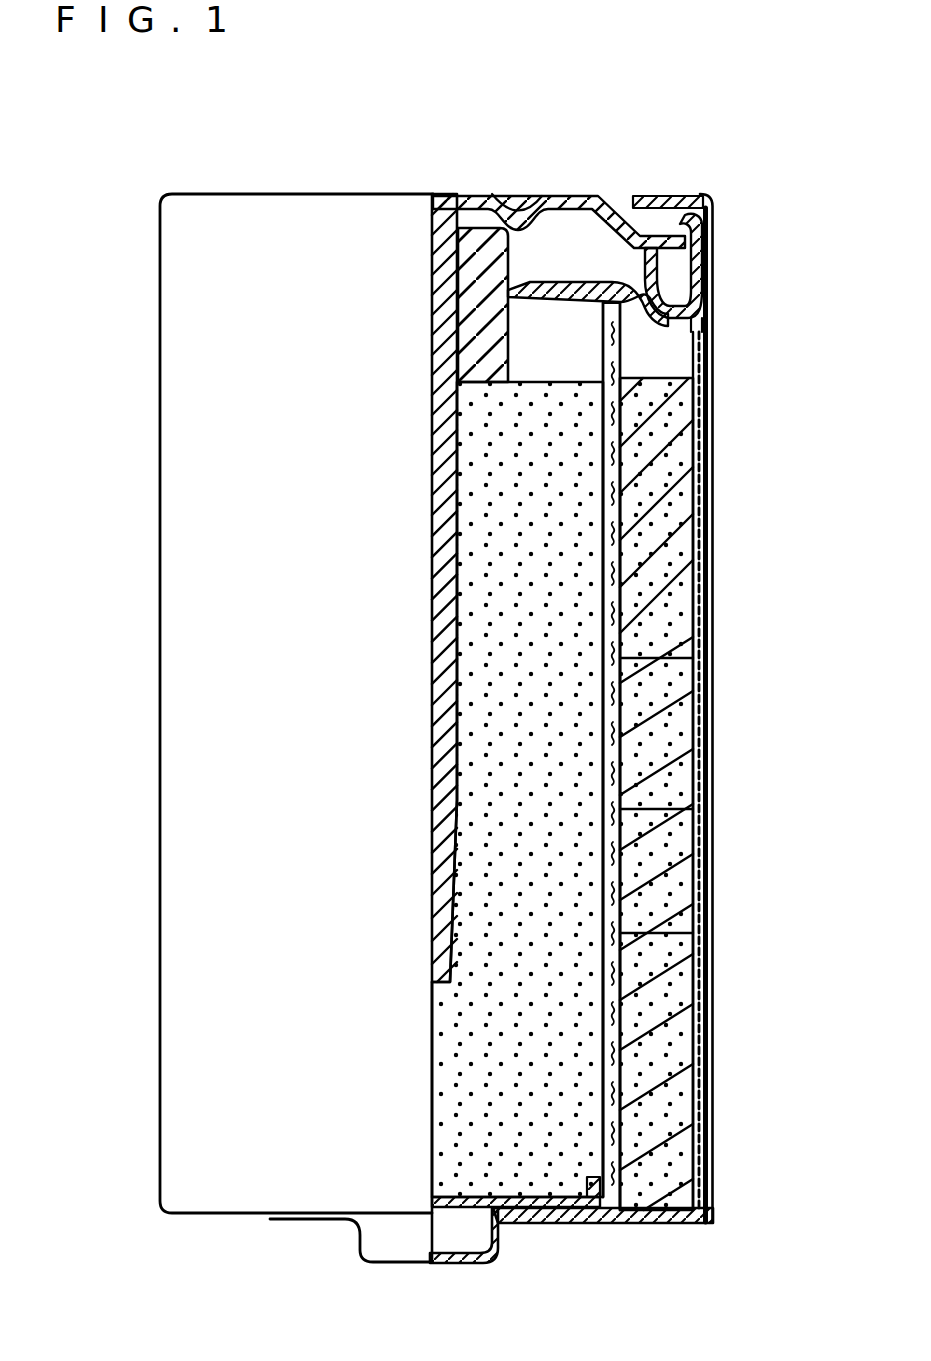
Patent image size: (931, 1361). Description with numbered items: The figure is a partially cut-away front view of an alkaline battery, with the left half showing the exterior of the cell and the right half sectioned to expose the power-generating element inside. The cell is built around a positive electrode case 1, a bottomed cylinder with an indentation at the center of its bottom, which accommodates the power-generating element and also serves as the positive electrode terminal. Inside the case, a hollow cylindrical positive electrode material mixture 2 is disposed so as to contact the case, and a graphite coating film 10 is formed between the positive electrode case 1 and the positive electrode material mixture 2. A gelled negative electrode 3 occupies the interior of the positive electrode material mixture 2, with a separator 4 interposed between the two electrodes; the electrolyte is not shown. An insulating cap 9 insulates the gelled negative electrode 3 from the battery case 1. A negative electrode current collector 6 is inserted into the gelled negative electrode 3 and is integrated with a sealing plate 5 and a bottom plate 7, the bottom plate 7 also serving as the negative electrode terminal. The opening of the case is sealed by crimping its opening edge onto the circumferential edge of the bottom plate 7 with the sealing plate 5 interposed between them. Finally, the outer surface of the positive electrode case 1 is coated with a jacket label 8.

The positive electrode case 1 is at (712, 665).
The positive electrode material mixture 2 is at (655, 740).
The gelled negative electrode 3 is at (565, 568).
The separator 4 is at (620, 805).
The sealing plate 5 is at (492, 340).
The negative electrode current collector 6 is at (441, 482).
The bottom plate 7 is at (488, 194).
The jacket label 8 is at (713, 277).
The insulating cap 9 is at (538, 1223).
The graphite coating film 10 is at (712, 973).